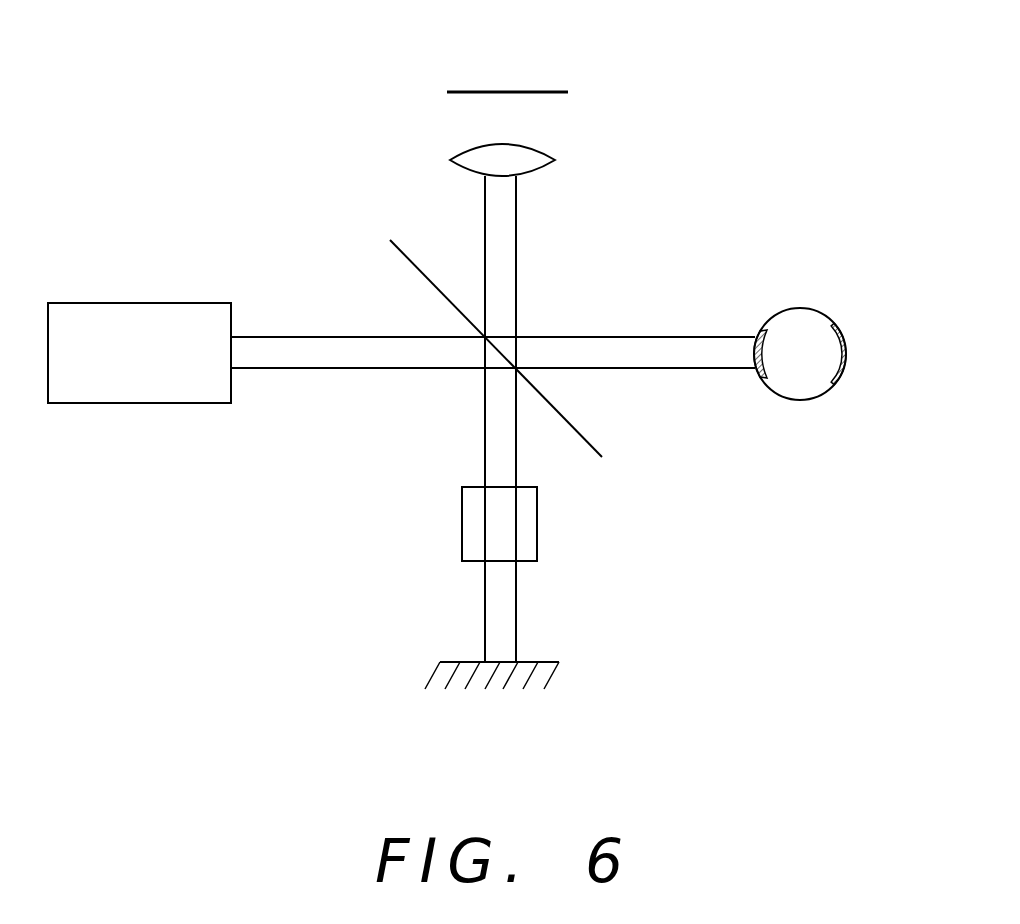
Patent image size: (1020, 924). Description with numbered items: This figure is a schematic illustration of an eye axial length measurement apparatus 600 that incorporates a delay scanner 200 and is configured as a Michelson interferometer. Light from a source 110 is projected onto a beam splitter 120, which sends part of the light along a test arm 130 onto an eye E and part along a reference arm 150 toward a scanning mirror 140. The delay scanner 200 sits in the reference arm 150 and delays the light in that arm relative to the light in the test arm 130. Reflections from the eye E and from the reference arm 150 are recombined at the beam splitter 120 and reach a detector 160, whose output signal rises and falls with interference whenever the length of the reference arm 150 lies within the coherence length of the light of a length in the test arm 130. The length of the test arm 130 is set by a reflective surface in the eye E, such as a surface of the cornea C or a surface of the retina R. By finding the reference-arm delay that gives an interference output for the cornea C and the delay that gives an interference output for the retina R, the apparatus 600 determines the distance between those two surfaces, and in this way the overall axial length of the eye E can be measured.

The eye axial length measurement apparatus 600 is at (252, 140).
The source 110 is at (140, 303).
The beam splitter 120 is at (418, 265).
The test arm 130 is at (613, 337).
The reference arm 150 is at (483, 467).
The detector 160 is at (537, 91).
The delay scanner 200 is at (538, 523).
The scanning mirror 140 is at (528, 662).
The eye E is at (822, 312).
The cornea C is at (757, 375).
The retina R is at (847, 355).